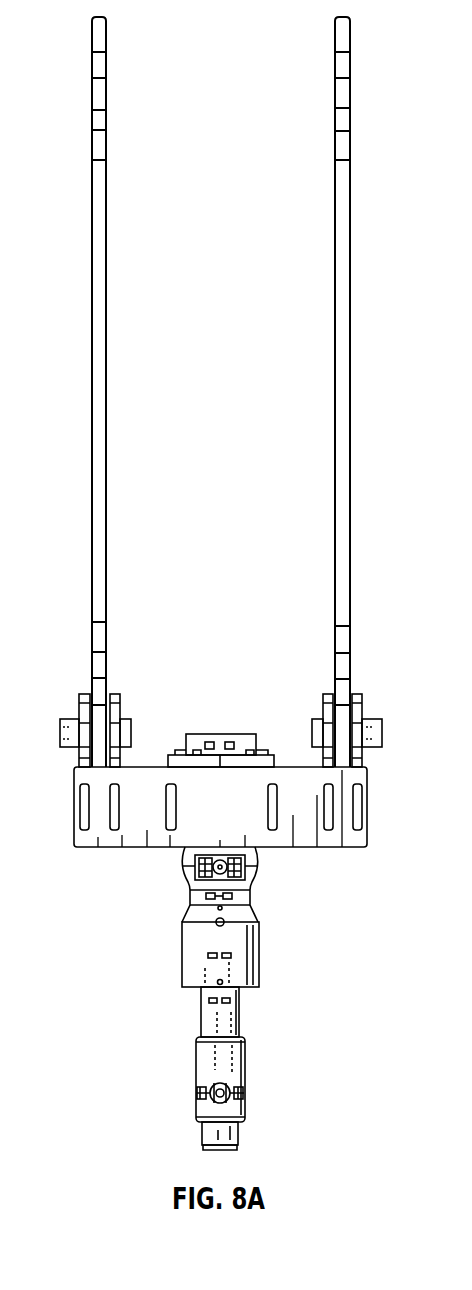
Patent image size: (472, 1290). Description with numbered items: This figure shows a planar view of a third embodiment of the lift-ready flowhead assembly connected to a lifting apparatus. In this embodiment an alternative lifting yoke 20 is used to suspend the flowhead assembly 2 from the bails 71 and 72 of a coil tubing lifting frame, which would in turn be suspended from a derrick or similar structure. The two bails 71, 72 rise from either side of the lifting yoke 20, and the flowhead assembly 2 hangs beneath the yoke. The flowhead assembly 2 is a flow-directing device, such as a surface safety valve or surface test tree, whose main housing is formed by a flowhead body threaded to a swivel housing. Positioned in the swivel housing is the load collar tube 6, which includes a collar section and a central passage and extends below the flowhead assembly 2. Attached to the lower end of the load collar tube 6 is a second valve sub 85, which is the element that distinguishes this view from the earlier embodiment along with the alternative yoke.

The bail 71 is at (92, 254).
The bail 72 is at (350, 420).
The lifting yoke 20 is at (383, 790).
The flowhead assembly 2 is at (262, 946).
The load collar tube 6 is at (240, 1020).
The second valve sub 85 is at (246, 1068).